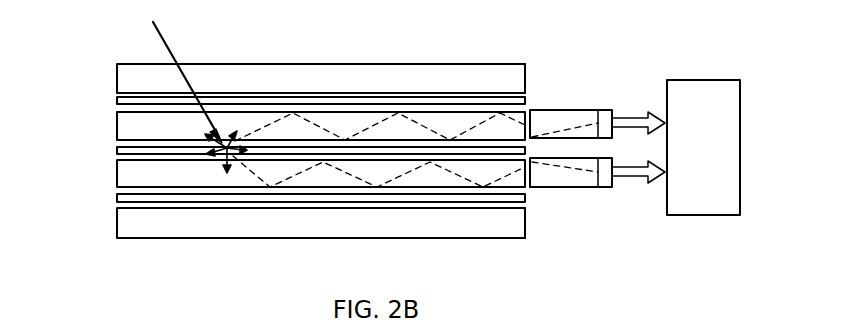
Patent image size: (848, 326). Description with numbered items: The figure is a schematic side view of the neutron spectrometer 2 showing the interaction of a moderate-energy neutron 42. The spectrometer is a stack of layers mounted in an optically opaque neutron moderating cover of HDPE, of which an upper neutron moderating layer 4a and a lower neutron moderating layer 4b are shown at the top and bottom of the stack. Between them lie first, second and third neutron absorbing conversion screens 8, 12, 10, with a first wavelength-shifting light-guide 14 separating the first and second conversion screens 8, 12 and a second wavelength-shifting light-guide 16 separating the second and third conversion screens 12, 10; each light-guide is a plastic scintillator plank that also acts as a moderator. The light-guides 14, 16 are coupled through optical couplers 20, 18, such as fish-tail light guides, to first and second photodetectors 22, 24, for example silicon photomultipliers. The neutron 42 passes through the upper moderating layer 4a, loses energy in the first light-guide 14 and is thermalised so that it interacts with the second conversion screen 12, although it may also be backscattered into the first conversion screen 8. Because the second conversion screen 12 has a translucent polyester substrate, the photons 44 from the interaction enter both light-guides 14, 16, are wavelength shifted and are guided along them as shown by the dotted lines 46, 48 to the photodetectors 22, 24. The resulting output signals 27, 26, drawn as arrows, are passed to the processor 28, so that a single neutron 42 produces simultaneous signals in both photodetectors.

The spectrometer 2 is at (104, 75).
The upper neutron moderating layer 4a is at (528, 72).
The lower neutron moderating layer 4b is at (527, 220).
The first neutron absorbing conversion screen 8 is at (117, 103).
The third neutron absorbing conversion screen 10 is at (117, 199).
The second neutron absorbing conversion screen 12 is at (117, 153).
The first wavelength-shifting light-guide 14 is at (117, 128).
The second wavelength-shifting light-guide 16 is at (117, 175).
The optical coupler 18 is at (575, 180).
The optical coupler 20 is at (587, 108).
The first photodetector 22 is at (603, 108).
The second photodetector 24 is at (607, 188).
The output signal 26 is at (642, 177).
The output signal 27 is at (643, 117).
The processor 28 is at (719, 158).
The neutron 42 is at (172, 43).
The photons 44 is at (213, 138).
The dotted line 46 is at (328, 130).
The dotted line 48 is at (340, 167).